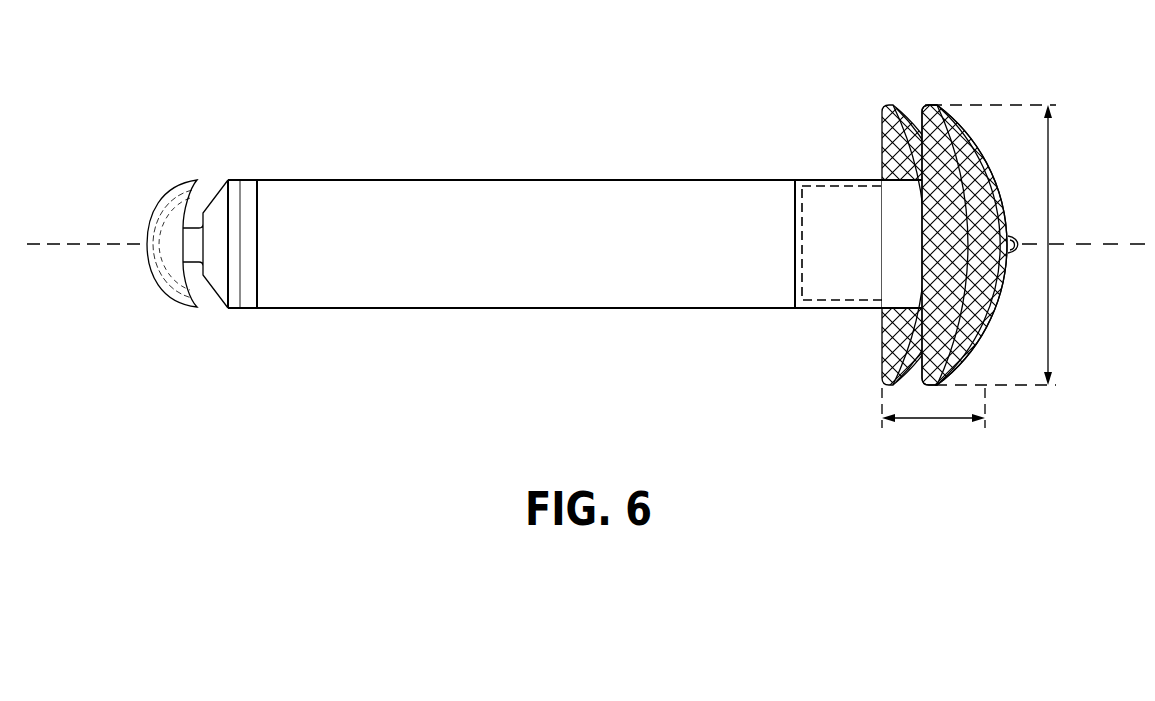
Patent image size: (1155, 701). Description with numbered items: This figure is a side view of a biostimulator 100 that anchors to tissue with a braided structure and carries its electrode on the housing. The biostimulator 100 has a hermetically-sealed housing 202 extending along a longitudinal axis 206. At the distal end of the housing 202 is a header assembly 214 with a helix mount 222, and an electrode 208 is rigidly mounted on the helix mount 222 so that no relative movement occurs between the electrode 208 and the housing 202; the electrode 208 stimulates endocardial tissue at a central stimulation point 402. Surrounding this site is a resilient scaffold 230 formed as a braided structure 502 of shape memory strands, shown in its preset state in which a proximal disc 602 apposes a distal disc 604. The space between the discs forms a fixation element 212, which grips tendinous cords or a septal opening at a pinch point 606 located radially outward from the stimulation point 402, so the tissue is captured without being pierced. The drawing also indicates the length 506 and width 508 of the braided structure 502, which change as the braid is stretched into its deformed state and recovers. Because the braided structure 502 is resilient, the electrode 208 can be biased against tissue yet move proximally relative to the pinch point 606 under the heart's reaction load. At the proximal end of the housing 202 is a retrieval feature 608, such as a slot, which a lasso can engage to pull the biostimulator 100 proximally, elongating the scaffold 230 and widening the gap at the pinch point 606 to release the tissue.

The biostimulator 100 is at (588, 254).
The housing 202 is at (483, 310).
The longitudinal axis 206 is at (1090, 244).
The electrode 208 is at (1072, 215).
The stimulation point 402 is at (1012, 236).
The fixation element 212 is at (931, 72).
The pinch point 606 is at (915, 102).
The header assembly 214 is at (1072, 215).
The helix mount 222 is at (1072, 215).
The resilient scaffold 230 is at (866, 245).
The braided structure 502 is at (878, 149).
The length 506 is at (921, 426).
The width 508 is at (1051, 127).
The proximal disc 602 is at (866, 245).
The distal disc 604 is at (995, 211).
The retrieval feature 608 is at (197, 300).